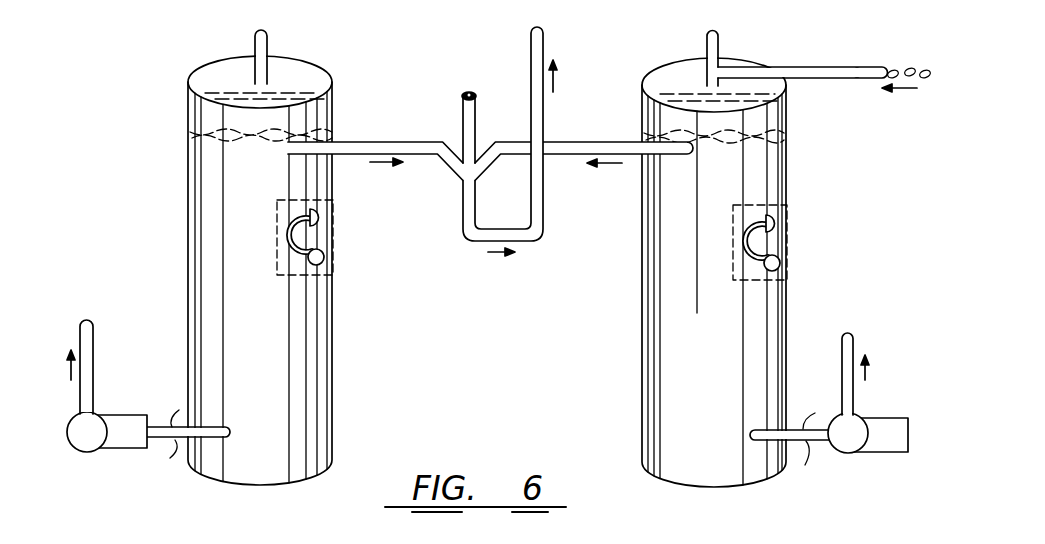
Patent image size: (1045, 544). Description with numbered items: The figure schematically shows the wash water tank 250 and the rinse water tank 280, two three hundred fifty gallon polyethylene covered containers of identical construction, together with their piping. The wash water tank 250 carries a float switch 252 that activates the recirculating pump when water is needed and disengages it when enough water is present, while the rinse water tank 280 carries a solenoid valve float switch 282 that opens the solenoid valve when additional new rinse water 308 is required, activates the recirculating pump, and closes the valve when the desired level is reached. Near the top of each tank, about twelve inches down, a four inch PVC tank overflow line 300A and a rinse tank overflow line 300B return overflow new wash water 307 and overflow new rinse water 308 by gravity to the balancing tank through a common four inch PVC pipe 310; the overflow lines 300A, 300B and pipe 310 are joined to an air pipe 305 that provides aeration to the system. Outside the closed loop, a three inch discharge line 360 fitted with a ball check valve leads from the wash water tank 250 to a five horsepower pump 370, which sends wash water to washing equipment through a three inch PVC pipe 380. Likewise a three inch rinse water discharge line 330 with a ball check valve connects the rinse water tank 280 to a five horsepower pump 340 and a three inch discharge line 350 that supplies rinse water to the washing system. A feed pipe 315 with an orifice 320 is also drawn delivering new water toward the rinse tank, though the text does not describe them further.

The wash water tank 250 is at (322, 341).
The float switch 252 is at (299, 243).
The rinse water tank 280 is at (653, 345).
The solenoid valve float switch 282 is at (757, 245).
The tank overflow line 300A is at (420, 143).
The rinse tank overflow line 300B is at (545, 165).
The air pipe 305 is at (467, 93).
The new wash water 307 is at (203, 148).
The new rinse water 308 is at (753, 182).
The PVC pipe 310 is at (544, 106).
The gas inlet pipe 315 is at (808, 78).
The inlet pipe orifice 320 is at (856, 67).
The rinse water discharge line 330 is at (798, 445).
The pump 340 is at (845, 455).
The discharge line 350 is at (842, 371).
The discharge line 360 is at (157, 440).
The pump 370 is at (73, 450).
The PVC pipe 380 is at (93, 380).